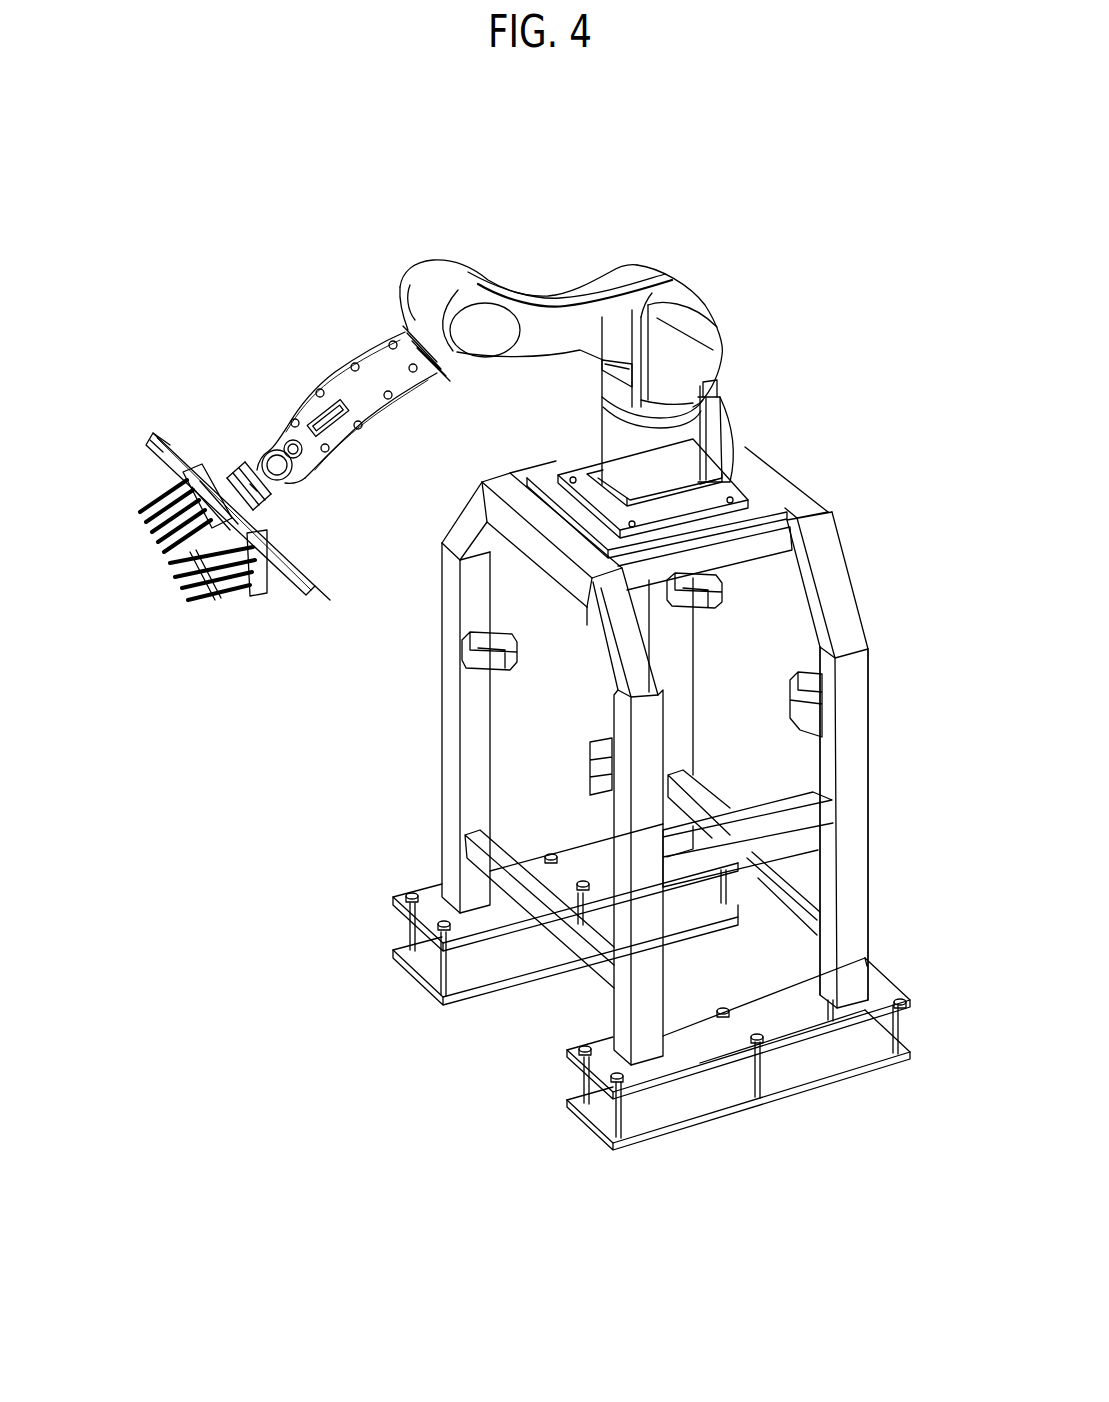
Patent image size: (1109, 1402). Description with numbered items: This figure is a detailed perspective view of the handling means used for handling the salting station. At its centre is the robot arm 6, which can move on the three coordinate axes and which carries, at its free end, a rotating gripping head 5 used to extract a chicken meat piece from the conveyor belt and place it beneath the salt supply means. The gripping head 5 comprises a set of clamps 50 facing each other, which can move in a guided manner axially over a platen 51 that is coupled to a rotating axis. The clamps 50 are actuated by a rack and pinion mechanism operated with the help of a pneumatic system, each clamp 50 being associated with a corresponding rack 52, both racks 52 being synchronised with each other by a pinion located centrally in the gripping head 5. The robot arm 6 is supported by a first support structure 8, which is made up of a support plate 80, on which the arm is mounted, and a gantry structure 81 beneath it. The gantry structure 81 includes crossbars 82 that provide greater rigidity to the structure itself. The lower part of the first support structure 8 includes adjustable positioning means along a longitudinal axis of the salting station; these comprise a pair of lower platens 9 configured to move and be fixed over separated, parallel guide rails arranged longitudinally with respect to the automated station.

The rotating gripping head 5 is at (131, 441).
The clamps 50 is at (195, 600).
The platen 51 is at (153, 434).
The rack 52 is at (247, 477).
The robot arm 6 is at (572, 340).
The first support structure 8 is at (838, 483).
The support plate 80 is at (718, 497).
The gantry structure 81 is at (845, 677).
The crossbars 82 is at (578, 918).
The lower platens 9 is at (690, 1128).